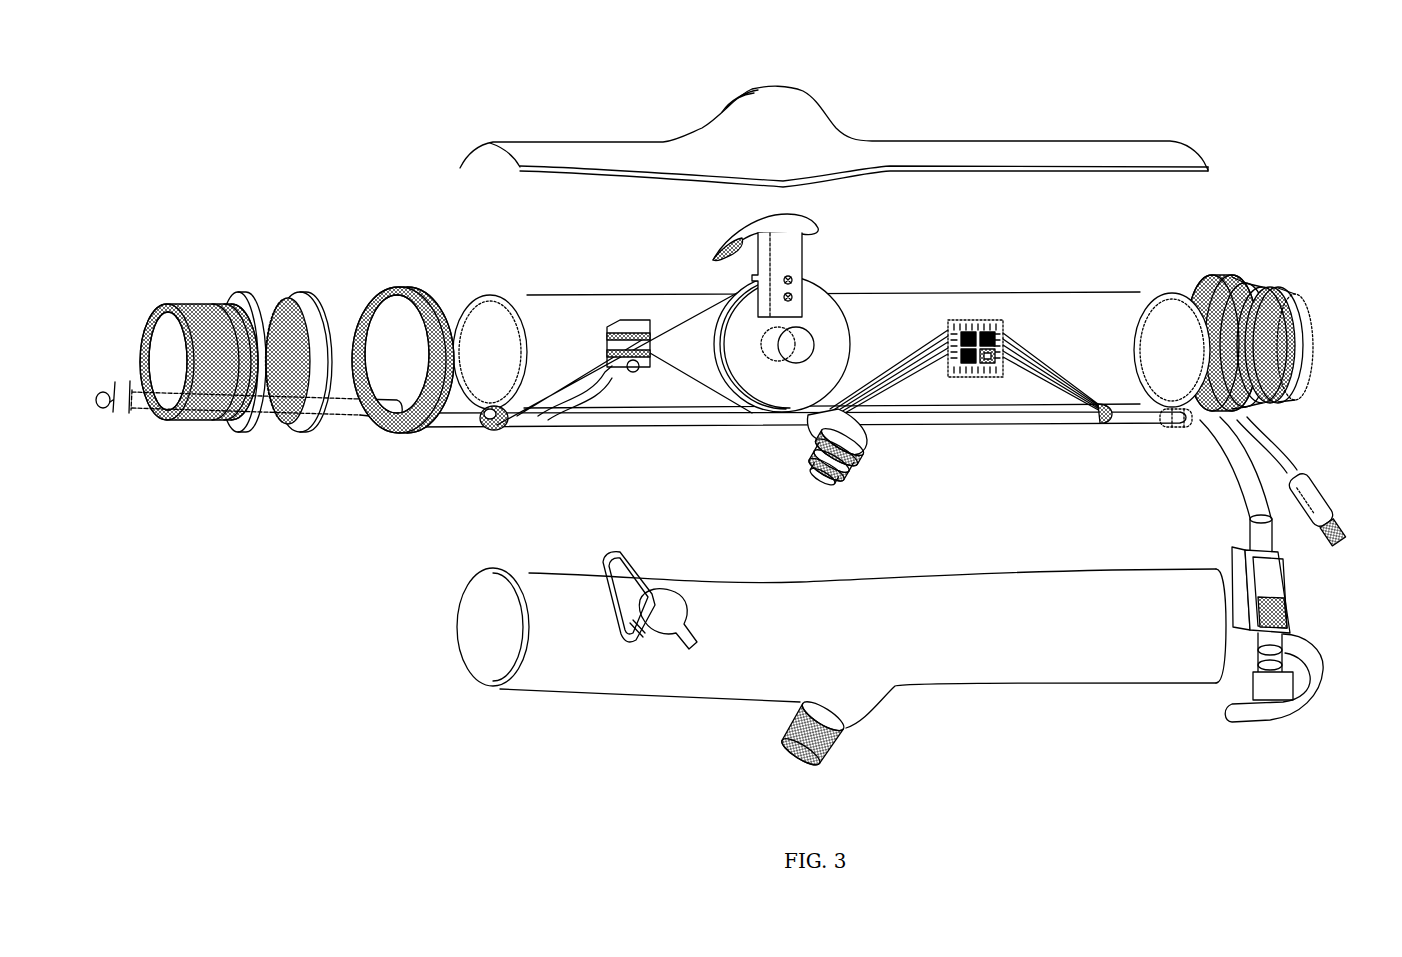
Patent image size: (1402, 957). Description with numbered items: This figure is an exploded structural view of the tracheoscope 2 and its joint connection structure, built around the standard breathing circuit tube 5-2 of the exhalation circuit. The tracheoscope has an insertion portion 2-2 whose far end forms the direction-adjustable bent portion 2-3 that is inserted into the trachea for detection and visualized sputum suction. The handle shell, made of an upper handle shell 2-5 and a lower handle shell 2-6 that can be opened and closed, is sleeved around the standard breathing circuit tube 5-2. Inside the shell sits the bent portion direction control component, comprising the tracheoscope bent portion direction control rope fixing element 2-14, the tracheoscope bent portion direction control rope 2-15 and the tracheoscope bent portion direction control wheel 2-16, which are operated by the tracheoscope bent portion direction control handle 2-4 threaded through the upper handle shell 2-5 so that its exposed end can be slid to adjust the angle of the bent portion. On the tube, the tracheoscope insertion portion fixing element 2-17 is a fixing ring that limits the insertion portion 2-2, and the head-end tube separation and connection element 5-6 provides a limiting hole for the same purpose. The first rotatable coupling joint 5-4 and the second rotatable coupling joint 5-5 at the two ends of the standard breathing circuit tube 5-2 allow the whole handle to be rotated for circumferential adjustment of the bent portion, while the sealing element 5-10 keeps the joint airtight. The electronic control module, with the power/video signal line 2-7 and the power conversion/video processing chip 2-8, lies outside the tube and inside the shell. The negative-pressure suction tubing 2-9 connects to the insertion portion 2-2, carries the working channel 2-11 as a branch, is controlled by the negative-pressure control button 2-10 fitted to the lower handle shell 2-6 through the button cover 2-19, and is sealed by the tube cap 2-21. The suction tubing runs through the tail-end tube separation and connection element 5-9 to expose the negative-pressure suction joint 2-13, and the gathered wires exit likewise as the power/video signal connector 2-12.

The tracheoscope 2 is at (834, 115).
The insertion portion 2-2 is at (340, 410).
The bent portion 2-3 is at (107, 410).
The tracheoscope bent portion direction control handle 2-4 is at (790, 263).
The upper handle shell 2-5 is at (1120, 148).
The lower handle shell 2-6 is at (877, 672).
The power/video signal line 2-7 is at (910, 383).
The power conversion/video processing chip 2-8 is at (983, 330).
The negative-pressure suction tubing 2-9 is at (570, 422).
The negative-pressure control button 2-10 is at (845, 440).
The working channel 2-11 is at (590, 398).
The power/video signal connector 2-12 is at (1338, 550).
The negative-pressure suction joint 2-13 is at (1300, 687).
The tracheoscope bent portion direction control rope fixing element 2-14 is at (640, 358).
The tracheoscope bent portion direction control rope 2-15 is at (700, 313).
The tracheoscope bent portion direction control wheel 2-16 is at (758, 395).
The tracheoscope insertion portion fixing element 2-17 is at (505, 425).
The button cover 2-19 is at (830, 755).
The tube cap 2-21 is at (617, 618).
The standard breathing circuit tube 5-2 is at (523, 303).
The first rotatable coupling joint 5-4 is at (245, 425).
The second rotatable coupling joint 5-5 is at (1295, 355).
The head-end tube separation and connection element 5-6 is at (425, 425).
The tail-end tube separation and connection element 5-9 is at (1197, 430).
The sealing element 5-10 is at (295, 415).